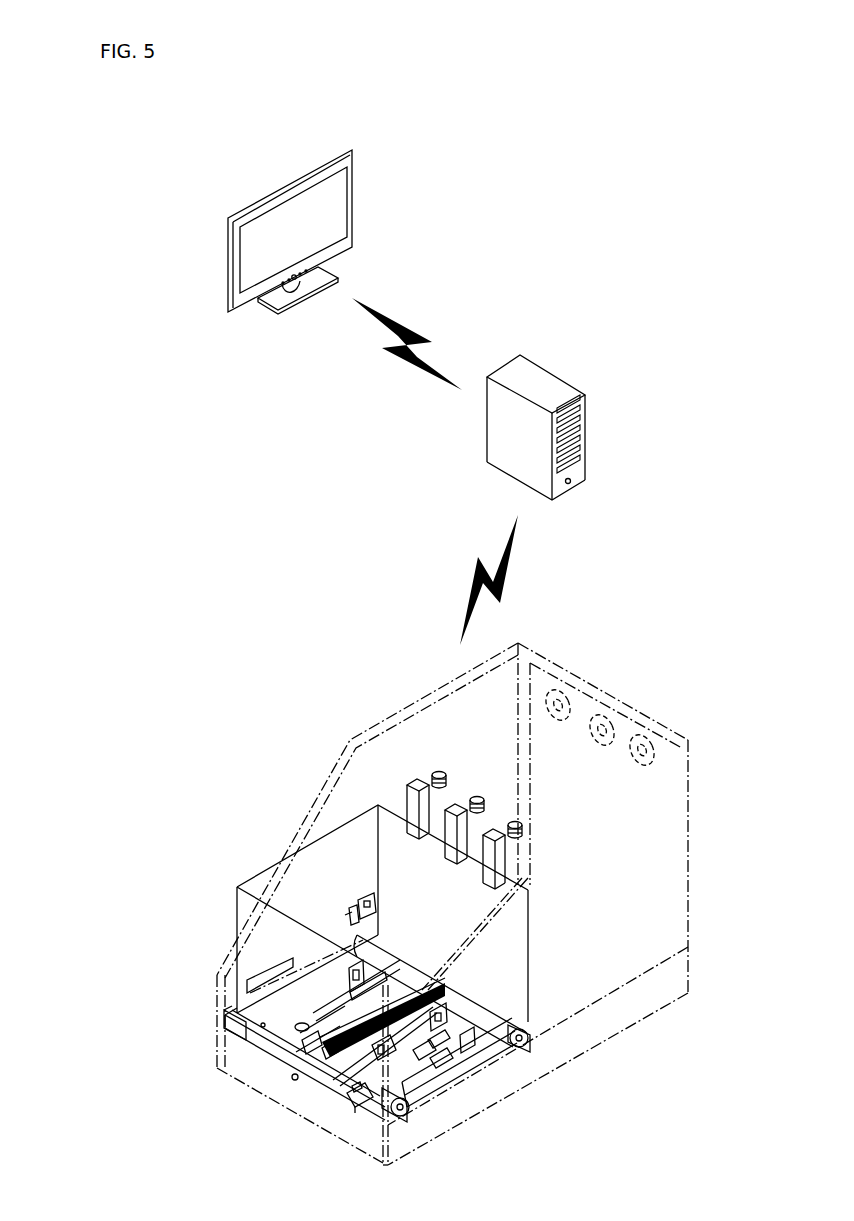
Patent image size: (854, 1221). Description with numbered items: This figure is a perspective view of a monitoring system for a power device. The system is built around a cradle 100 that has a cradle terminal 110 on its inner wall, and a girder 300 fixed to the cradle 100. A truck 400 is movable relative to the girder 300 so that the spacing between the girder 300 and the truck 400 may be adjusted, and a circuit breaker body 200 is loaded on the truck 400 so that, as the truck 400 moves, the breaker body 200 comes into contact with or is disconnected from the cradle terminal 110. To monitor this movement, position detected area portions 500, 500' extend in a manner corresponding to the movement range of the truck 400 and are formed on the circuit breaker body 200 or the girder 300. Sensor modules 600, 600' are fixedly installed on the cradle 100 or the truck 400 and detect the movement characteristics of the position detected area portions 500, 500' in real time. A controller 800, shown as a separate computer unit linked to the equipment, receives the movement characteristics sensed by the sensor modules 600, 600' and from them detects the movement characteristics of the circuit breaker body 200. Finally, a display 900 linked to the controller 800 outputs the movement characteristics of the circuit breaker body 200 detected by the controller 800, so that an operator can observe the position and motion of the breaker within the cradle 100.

The cradle 100 is at (456, 904).
The cradle terminal 110 is at (602, 722).
The circuit breaker body 200 is at (366, 910).
The girder 300 is at (312, 1041).
The truck 400 is at (475, 1079).
The position detected area portion 500 is at (397, 1078).
The position detected area portion 500' is at (268, 877).
The sensor module 600 is at (337, 1138).
The sensor module 600' is at (337, 815).
The controller 800 is at (562, 401).
The display 900 is at (288, 214).